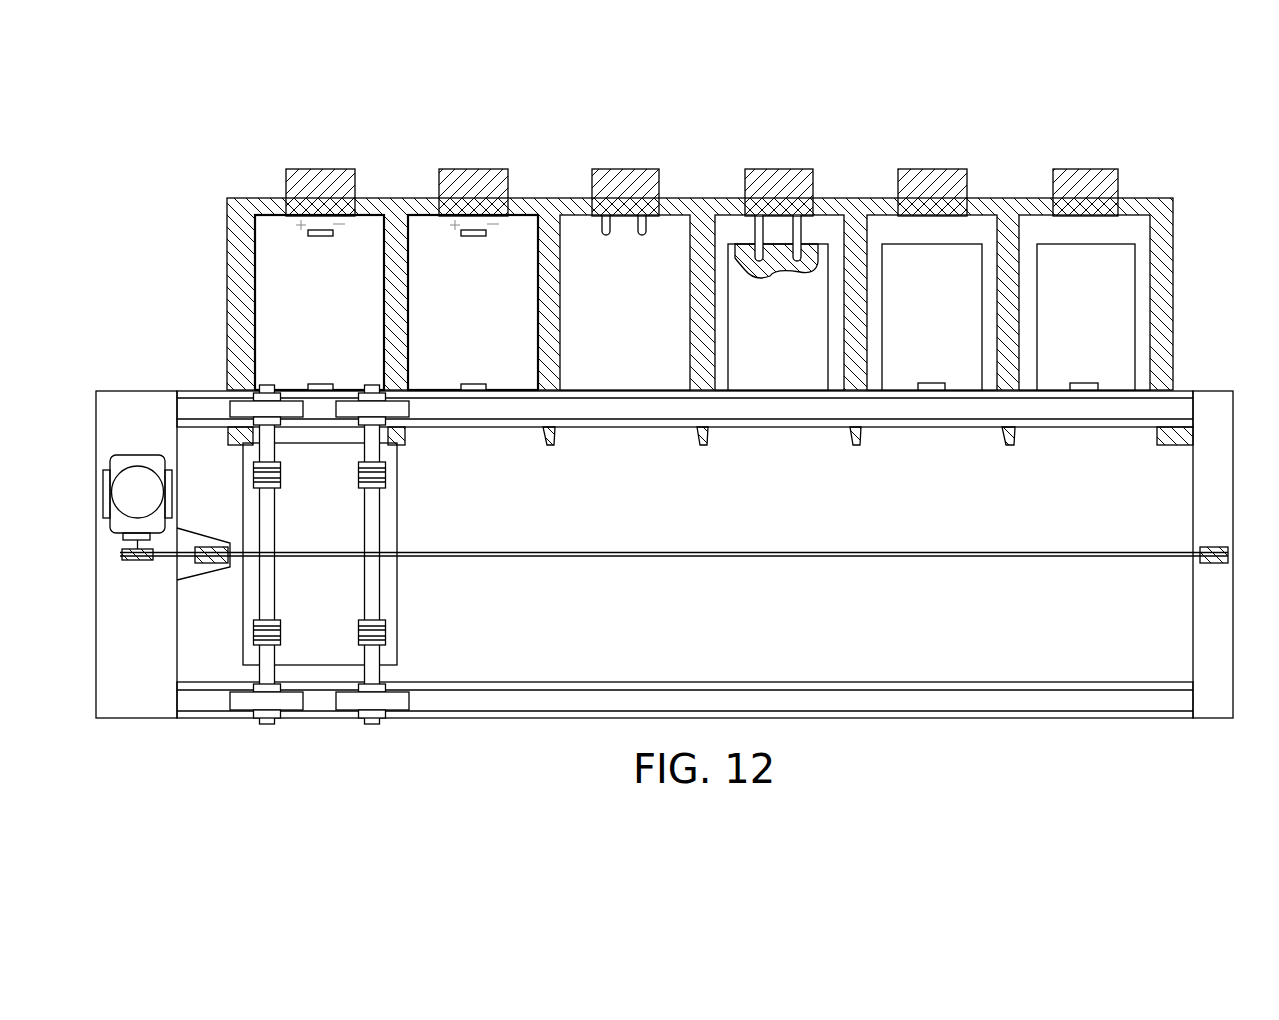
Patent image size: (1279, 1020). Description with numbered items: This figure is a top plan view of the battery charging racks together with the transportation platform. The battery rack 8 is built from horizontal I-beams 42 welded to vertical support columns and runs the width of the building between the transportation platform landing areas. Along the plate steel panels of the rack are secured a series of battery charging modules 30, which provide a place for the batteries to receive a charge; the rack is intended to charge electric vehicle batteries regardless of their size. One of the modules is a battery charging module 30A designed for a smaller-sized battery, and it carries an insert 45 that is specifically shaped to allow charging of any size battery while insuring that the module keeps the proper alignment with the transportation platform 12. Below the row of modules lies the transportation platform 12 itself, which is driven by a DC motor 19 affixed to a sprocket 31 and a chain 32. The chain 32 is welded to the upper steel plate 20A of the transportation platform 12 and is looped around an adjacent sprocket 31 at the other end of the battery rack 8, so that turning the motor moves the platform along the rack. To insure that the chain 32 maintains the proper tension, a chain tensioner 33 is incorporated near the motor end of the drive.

The battery rack 8 is at (735, 231).
The battery charging module 30 is at (587, 250).
The battery charging module 30A is at (1142, 296).
The insert 45 is at (1133, 230).
The transportation platform 12 is at (397, 508).
The horizontal I-beams 42 is at (757, 427).
The DC motor 19 is at (122, 455).
The chain 32 is at (507, 552).
The sprocket 31 is at (137, 563).
The chain tensioner 33 is at (212, 547).
The upper steel plate 20A is at (760, 631).